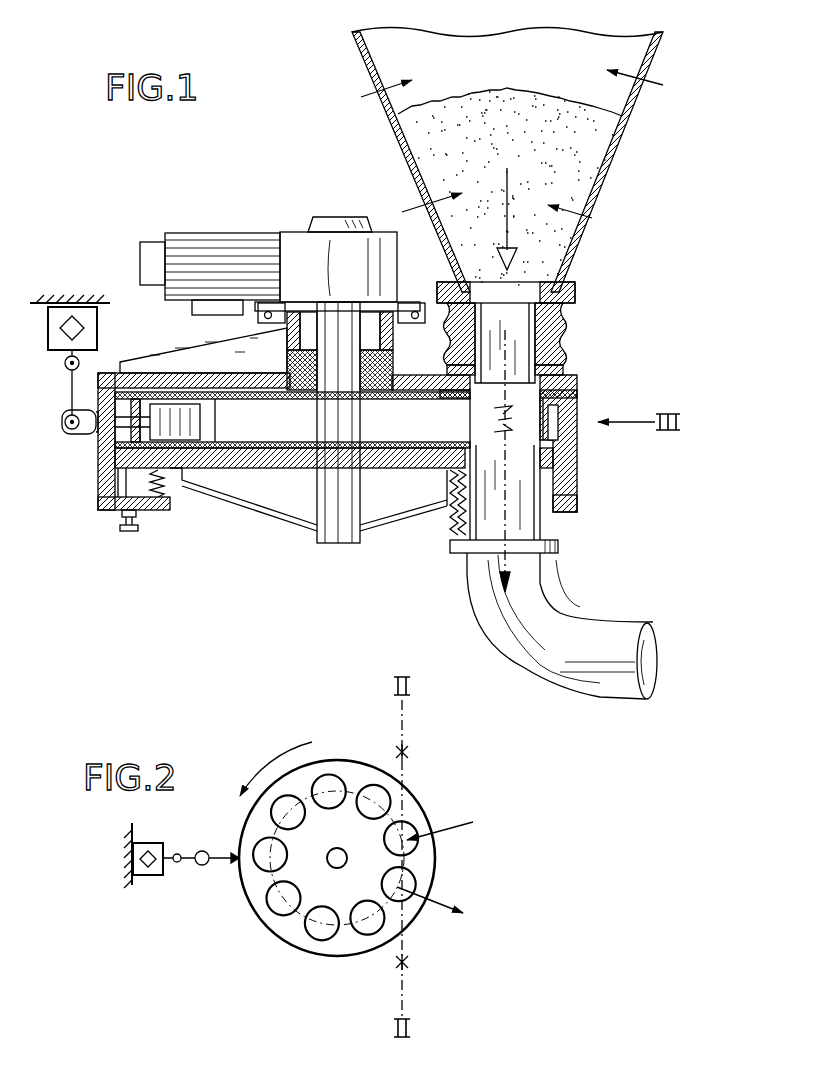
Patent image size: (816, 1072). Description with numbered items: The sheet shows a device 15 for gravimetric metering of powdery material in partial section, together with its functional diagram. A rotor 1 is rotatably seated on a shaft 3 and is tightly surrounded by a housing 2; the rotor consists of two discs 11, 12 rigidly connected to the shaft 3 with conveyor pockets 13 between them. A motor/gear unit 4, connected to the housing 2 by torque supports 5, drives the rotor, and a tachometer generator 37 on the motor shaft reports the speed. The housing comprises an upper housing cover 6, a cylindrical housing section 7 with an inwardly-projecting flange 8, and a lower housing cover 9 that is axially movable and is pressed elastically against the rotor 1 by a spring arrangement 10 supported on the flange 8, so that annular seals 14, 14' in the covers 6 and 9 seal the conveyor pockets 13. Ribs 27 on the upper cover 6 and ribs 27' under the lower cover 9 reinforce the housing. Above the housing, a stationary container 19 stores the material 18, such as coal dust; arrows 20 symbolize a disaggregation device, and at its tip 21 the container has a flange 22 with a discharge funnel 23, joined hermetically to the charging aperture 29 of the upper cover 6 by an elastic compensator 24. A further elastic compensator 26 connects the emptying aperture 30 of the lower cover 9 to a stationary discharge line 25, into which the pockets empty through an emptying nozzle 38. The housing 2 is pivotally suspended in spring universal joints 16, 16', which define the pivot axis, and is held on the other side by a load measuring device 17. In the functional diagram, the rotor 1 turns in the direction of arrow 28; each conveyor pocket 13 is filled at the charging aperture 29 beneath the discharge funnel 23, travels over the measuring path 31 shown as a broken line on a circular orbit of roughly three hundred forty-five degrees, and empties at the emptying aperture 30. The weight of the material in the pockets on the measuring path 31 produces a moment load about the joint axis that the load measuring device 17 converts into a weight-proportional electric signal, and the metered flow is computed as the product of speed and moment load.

In FIG. 1, the rotor 1 is at (258, 432).
In FIG. 2, the rotor 1 is at (280, 928).
In FIG. 1, the housing 2 is at (578, 453).
In FIG. 1, the shaft 3 is at (330, 320).
In FIG. 1, the motor/gear unit 4 is at (293, 240).
In FIG. 1, the torque supports 5 is at (418, 292).
In FIG. 1, the upper housing cover 6 is at (192, 380).
In FIG. 1, the cylindrical housing section 7 is at (108, 475).
In FIG. 1, the inwardly-projecting flange 8 is at (103, 510).
In FIG. 1, the lower housing cover 9 is at (217, 480).
In FIG. 1, the spring arrangement 10 is at (163, 490).
In FIG. 1, the disc 11 is at (372, 405).
In FIG. 1, the disc 12 is at (407, 477).
In FIG. 1, the conveyor pockets 13 is at (70, 416).
In FIG. 2, the conveyor pockets 13 is at (404, 822).
In FIG. 1, the seal 14 is at (113, 405).
In FIG. 1, the seal 14' is at (85, 433).
In FIG. 1, the device 15 is at (188, 326).
In FIG. 2, the spring universal joint 16 is at (423, 857).
In FIG. 1, the universal joint 16' is at (572, 461).
In FIG. 2, the universal joint 16' is at (430, 735).
In FIG. 1, the load measuring device 17 is at (48, 328).
In FIG. 2, the load measuring device 17 is at (160, 878).
In FIG. 1, the material 18 is at (565, 152).
In FIG. 1, the container 19 is at (551, 50).
In FIG. 1, the arrows 20 is at (362, 96).
In FIG. 1, the tip 21 is at (602, 185).
In FIG. 1, the flange 22 is at (575, 286).
In FIG. 1, the discharge funnel 23 is at (525, 343).
In FIG. 1, the elastic compensator 24 is at (570, 350).
In FIG. 1, the discharge line 25 is at (655, 678).
In FIG. 1, the elastic compensator 26 is at (520, 512).
In FIG. 1, the ribs 27 is at (418, 346).
In FIG. 1, the ribs 27' is at (283, 490).
In FIG. 2, the arrow 28 is at (268, 762).
In FIG. 1, the charging aperture 29 is at (527, 398).
In FIG. 2, the charging aperture 29 is at (462, 825).
In FIG. 1, the emptying aperture 30 is at (577, 500).
In FIG. 2, the emptying aperture 30 is at (455, 908).
In FIG. 2, the measuring path 31 is at (322, 922).
In FIG. 1, the tachometer generator 37 is at (152, 247).
In FIG. 1, the emptying nozzle 38 is at (555, 522).